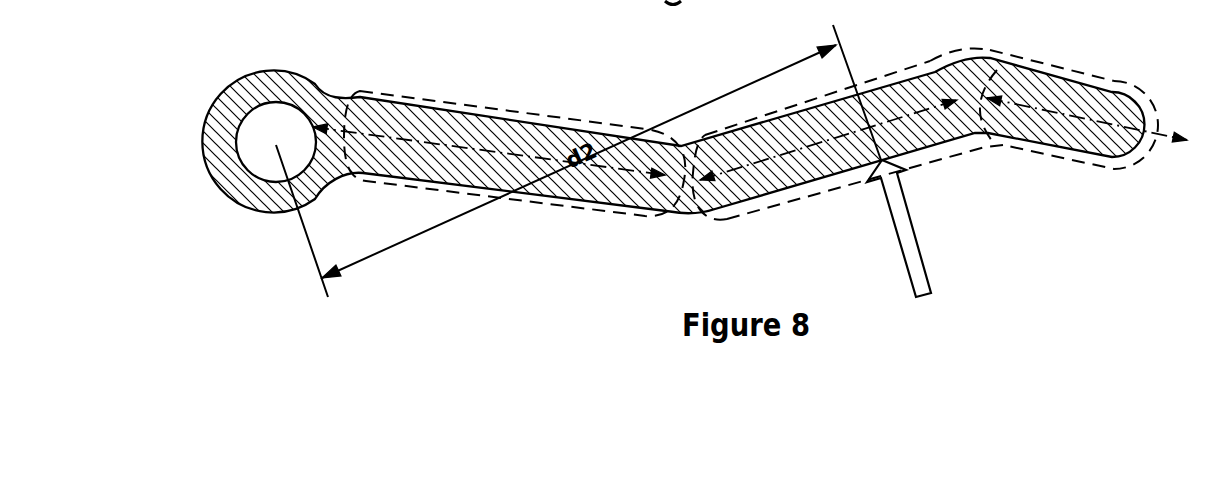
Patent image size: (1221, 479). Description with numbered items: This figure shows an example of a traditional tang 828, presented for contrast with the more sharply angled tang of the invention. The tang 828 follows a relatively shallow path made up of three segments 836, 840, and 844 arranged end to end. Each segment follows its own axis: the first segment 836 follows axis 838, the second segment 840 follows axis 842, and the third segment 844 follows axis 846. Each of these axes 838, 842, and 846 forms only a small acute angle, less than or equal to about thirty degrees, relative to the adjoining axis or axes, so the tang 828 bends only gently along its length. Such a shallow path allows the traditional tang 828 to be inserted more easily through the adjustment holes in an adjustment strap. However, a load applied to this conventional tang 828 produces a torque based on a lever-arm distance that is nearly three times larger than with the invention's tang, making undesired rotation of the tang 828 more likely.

The tang 828 is at (341, 36).
The segment 836 is at (527, 203).
The axis 838 is at (516, 152).
The segment 840 is at (835, 187).
The axis 842 is at (936, 58).
The segment 844 is at (1082, 162).
The axis 846 is at (1085, 62).